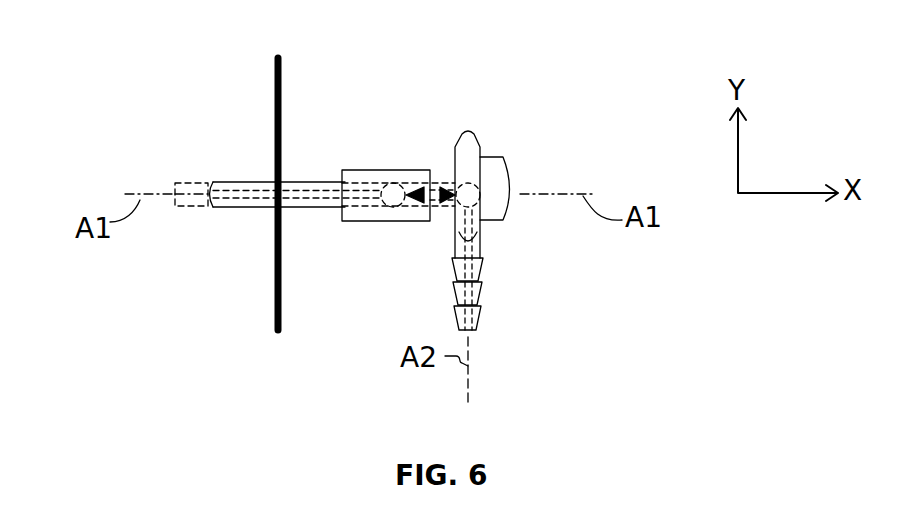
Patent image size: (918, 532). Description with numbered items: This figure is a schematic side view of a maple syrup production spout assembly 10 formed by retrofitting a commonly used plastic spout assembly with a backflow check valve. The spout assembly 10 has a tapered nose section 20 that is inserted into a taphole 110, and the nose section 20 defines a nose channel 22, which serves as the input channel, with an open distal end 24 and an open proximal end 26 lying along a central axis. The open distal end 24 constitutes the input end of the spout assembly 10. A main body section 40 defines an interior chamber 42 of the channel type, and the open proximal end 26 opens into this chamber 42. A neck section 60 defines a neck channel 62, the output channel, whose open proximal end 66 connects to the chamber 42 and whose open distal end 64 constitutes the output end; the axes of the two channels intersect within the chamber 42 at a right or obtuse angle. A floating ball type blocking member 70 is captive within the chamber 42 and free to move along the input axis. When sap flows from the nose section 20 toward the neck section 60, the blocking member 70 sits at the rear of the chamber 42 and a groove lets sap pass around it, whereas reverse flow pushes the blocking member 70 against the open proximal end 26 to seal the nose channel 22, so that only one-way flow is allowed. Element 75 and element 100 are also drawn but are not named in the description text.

The maple spout assembly 10 is at (148, 51).
The nose section 20 is at (252, 183).
The nose channel 22 is at (250, 198).
The open distal end 24 is at (210, 183).
The open proximal end 26 is at (378, 208).
The main body section 40 is at (342, 131).
The interior chamber 42 is at (442, 207).
The neck section 60 is at (497, 262).
The neck channel 62 is at (484, 290).
The open distal end 64 is at (472, 331).
The open proximal end 66 is at (484, 218).
The blocking member 70 is at (386, 184).
The connection 75 is at (447, 185).
The wall 100 is at (283, 92).
The taphole 110 is at (190, 208).